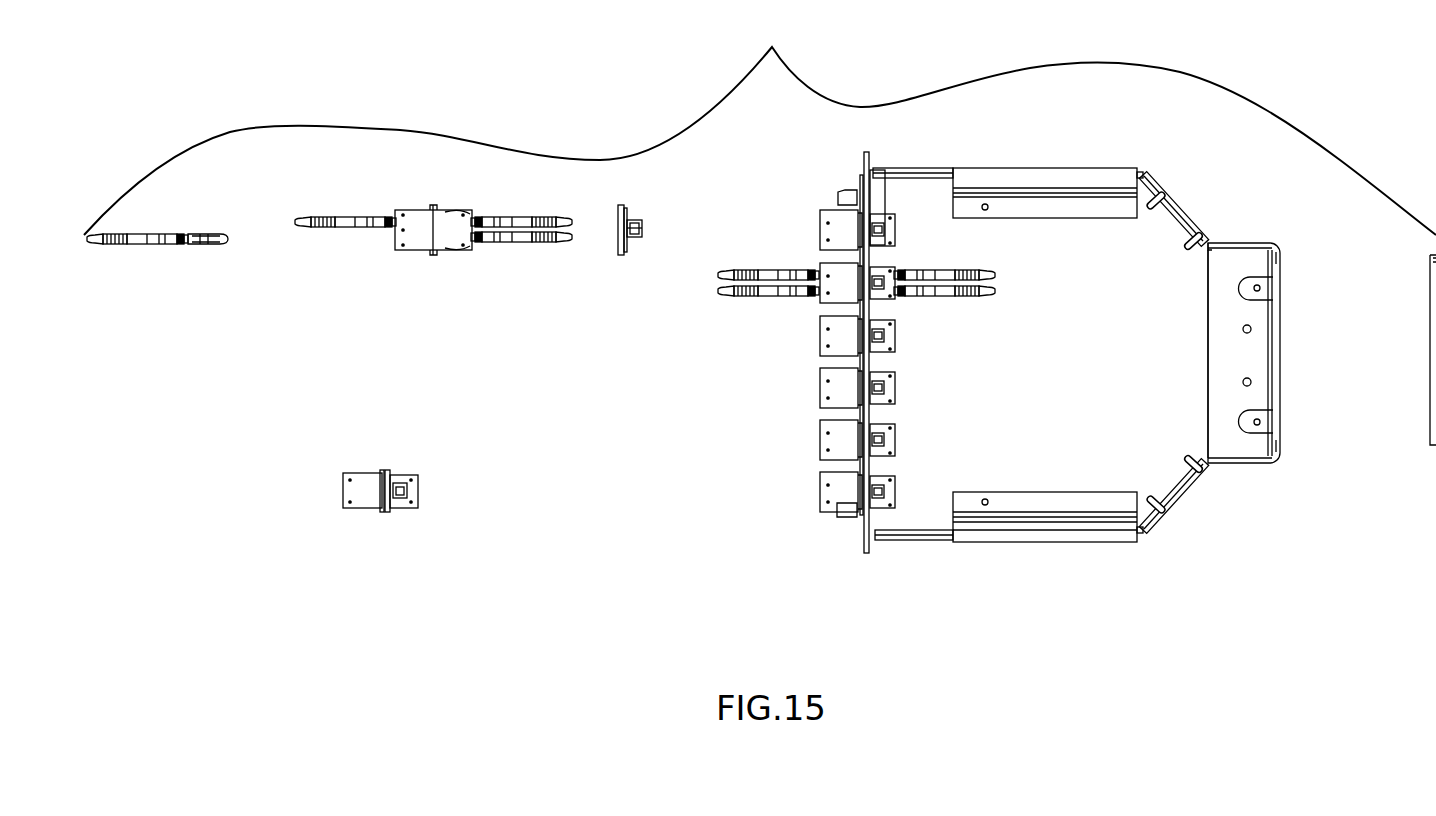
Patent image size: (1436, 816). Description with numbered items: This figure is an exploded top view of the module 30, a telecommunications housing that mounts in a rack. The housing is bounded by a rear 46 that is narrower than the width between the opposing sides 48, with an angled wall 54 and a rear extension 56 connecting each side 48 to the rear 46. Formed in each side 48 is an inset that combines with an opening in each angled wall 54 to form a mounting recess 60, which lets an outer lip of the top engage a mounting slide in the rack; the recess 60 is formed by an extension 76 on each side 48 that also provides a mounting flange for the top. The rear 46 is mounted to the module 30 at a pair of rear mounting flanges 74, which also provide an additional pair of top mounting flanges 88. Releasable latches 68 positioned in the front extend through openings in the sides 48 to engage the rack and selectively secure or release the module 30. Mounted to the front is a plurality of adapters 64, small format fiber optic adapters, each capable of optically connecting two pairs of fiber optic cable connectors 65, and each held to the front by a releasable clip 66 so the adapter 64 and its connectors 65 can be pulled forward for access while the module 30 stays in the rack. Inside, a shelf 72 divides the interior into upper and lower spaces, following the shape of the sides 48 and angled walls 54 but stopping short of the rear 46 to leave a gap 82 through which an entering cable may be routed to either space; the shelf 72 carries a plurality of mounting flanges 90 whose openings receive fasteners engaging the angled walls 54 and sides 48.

The module 30 is at (760, 126).
The rear 46 is at (1425, 430).
The opposing sides 48 is at (1030, 170).
The angled wall 54 is at (1148, 172).
The rear extension 56 is at (1247, 243).
The mounting recess 60 is at (988, 172).
The adapter 64 is at (420, 238).
The fiber optic cable connector 65 is at (148, 239).
The releasable clip 66 is at (623, 255).
The releasable latch 68 is at (850, 190).
The shelf 72 is at (1034, 352).
The rear mounting flange 74 is at (1278, 262).
The extension 76 is at (1060, 205).
The gap 82 is at (1250, 357).
The top mounting flange 88 is at (1262, 288).
The mounting flange 90 is at (905, 177).